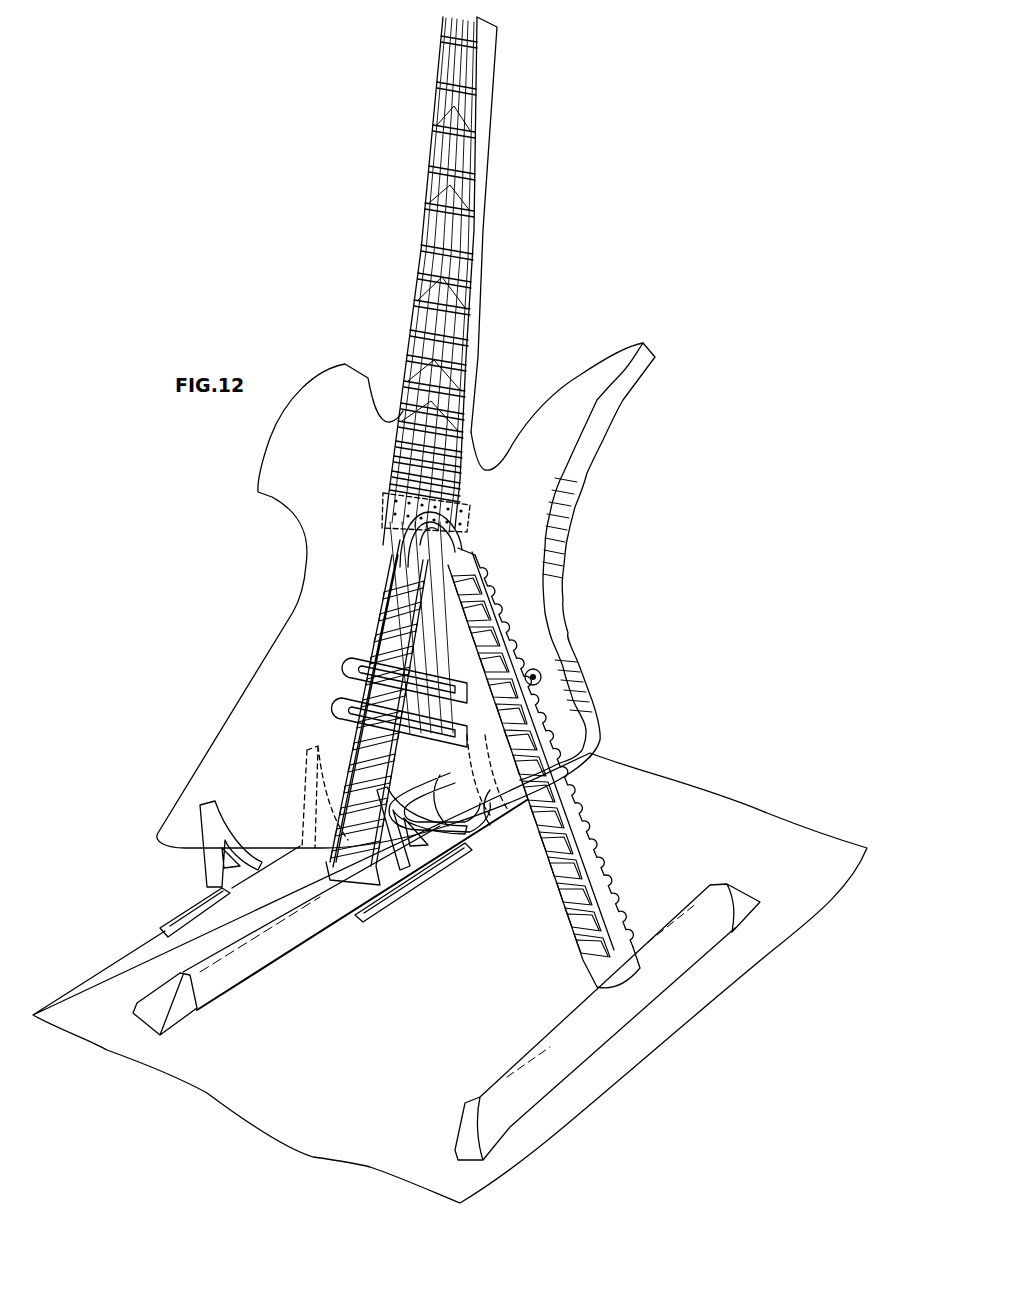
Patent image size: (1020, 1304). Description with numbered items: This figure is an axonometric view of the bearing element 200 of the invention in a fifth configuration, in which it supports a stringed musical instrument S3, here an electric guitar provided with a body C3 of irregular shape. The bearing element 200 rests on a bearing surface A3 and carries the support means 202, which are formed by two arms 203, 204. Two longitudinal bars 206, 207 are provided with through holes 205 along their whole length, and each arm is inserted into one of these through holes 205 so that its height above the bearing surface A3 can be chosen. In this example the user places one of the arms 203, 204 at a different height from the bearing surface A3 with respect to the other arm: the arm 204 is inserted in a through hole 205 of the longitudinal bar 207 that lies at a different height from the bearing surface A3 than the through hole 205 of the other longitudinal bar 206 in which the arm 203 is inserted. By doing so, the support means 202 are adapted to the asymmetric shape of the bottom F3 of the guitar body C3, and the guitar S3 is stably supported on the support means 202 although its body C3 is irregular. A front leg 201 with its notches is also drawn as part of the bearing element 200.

The bearing element 200 is at (595, 820).
The front support leg 201 is at (605, 800).
The support means 202 is at (279, 910).
The arm 203 is at (249, 890).
The arm 204 is at (493, 840).
The through holes 205 is at (483, 573).
The longitudinal bar 206 is at (350, 760).
The longitudinal bar 207 is at (583, 873).
The stringed musical instrument S3 is at (513, 140).
The body C3 is at (570, 418).
The bearing surface A3 is at (775, 833).
The bottom F3 is at (386, 852).